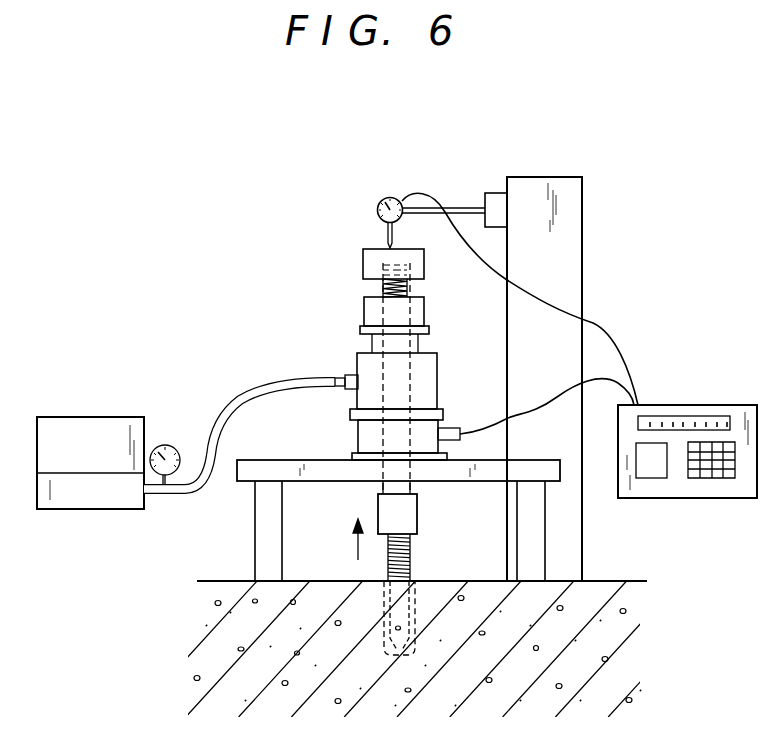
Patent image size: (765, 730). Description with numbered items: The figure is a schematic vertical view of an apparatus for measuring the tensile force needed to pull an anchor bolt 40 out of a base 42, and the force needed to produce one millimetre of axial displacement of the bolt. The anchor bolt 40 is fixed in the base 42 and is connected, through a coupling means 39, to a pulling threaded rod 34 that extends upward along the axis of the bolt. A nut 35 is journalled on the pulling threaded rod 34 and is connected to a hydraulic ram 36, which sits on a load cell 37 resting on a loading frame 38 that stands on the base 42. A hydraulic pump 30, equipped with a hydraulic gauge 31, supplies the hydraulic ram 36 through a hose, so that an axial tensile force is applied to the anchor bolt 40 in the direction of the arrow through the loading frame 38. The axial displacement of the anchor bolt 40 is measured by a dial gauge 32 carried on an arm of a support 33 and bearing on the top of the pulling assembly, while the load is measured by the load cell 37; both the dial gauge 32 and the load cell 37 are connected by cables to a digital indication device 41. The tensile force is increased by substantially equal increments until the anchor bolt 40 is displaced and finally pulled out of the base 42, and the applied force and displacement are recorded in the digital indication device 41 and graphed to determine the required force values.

The hydraulic pump 30 is at (88, 417).
The hydraulic gauge 31 is at (163, 444).
The dial gauge 32 is at (391, 197).
The support 33 is at (540, 192).
The pulling threaded rod 34 is at (380, 283).
The nut 35 is at (370, 313).
The hydraulic ram 36 is at (425, 382).
The load cell 37 is at (358, 437).
The loading frame 38 is at (255, 470).
The coupling means 39 is at (403, 512).
The anchor bolt 40 is at (408, 563).
The digital indication device 41 is at (718, 407).
The base 42 is at (557, 638).